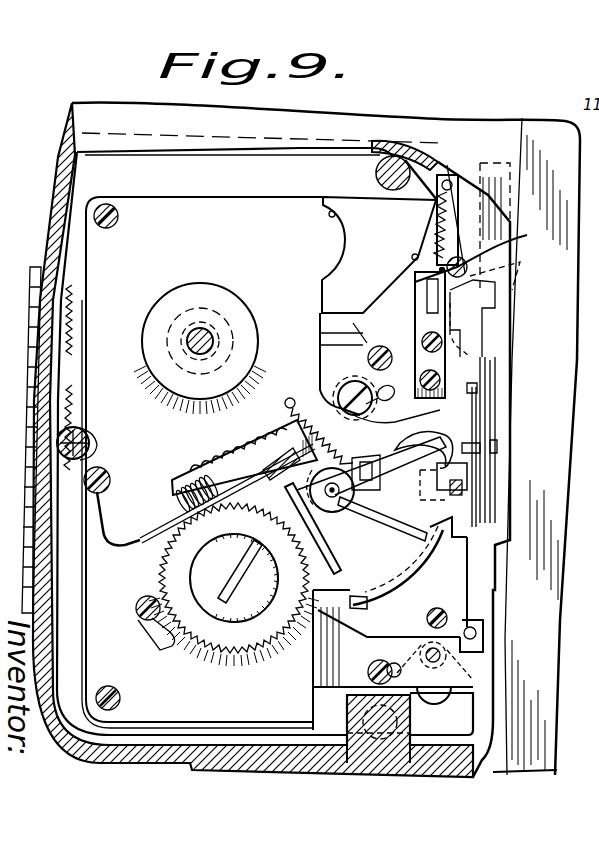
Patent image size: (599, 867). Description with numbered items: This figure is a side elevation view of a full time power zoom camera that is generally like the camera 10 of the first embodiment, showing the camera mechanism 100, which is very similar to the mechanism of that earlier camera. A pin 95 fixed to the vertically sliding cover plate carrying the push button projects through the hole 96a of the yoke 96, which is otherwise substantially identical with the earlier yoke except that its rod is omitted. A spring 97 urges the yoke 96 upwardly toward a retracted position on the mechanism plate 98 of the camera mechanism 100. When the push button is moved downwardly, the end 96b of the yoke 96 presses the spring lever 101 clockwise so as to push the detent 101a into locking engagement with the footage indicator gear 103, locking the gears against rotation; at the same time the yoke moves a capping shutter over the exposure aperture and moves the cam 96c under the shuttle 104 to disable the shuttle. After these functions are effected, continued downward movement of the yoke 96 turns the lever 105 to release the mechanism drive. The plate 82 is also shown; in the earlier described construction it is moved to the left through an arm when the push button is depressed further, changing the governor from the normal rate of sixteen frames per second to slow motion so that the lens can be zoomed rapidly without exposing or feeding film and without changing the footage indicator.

The camera 10 is at (150, 579).
The plate 82 is at (313, 692).
The pin 95 is at (481, 256).
The yoke 96 is at (485, 212).
The hole 96a is at (470, 272).
The end 96b is at (443, 413).
The cam 96c is at (467, 421).
The spring 97 is at (437, 230).
The mechanism plate 98 is at (113, 253).
The camera mechanism 100 is at (205, 187).
The spring lever 101 is at (377, 528).
The detent 101a is at (240, 645).
The gear 103 is at (213, 637).
The shuttle 104 is at (472, 490).
The lever 105 is at (398, 590).